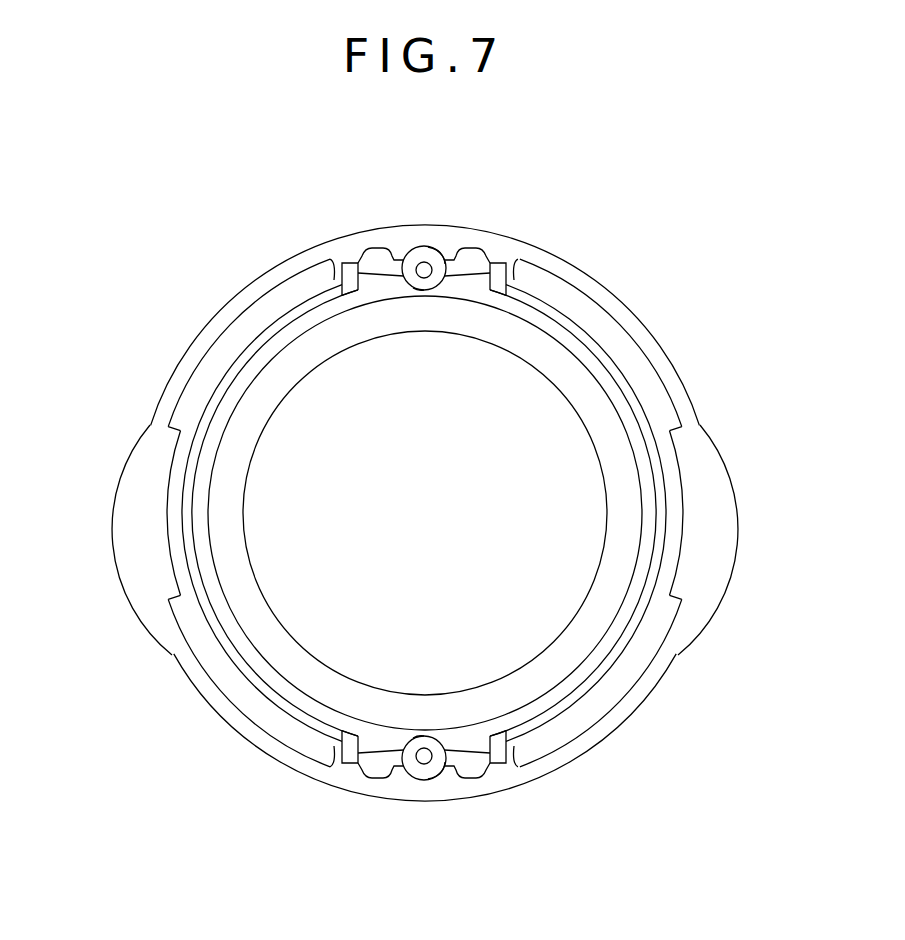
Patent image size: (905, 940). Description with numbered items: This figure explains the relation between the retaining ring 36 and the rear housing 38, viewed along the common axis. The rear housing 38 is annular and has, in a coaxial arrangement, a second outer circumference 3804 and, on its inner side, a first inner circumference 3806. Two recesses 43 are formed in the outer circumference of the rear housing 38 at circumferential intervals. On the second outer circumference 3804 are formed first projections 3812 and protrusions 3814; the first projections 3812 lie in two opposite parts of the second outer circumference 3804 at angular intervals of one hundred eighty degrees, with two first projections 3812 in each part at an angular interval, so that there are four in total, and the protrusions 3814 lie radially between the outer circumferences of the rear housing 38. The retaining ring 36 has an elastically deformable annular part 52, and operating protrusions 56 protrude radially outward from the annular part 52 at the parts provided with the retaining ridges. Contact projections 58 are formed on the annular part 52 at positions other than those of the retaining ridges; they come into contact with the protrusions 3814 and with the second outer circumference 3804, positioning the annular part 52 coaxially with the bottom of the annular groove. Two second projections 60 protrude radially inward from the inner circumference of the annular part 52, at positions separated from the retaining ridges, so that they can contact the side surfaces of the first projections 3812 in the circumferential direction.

The retaining ring 36 is at (207, 316).
The rear housing 38 is at (300, 387).
The recesses 43 is at (170, 433).
The annular part 52 is at (652, 697).
The operating protrusions 56 is at (140, 553).
The contact projections 58 is at (440, 252).
The second projections 60 is at (345, 295).
The second outer circumference 3804 is at (293, 308).
The first inner circumference 3806 is at (472, 340).
The first projections 3812 is at (350, 265).
The protrusions 3814 is at (415, 247).